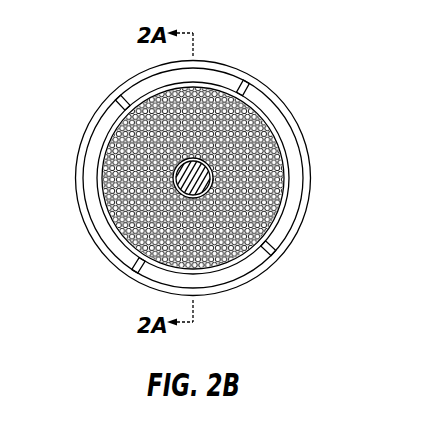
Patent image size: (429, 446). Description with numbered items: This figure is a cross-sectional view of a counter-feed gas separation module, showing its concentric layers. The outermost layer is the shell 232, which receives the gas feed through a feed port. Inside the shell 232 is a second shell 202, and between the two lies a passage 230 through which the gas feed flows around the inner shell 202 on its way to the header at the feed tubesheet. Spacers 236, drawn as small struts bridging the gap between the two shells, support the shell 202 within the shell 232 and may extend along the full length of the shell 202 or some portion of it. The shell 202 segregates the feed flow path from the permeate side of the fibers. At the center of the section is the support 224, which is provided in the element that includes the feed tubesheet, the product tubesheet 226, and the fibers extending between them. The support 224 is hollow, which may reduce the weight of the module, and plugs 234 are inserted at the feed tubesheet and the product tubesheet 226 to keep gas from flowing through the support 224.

The passage 230 is at (96, 149).
The shell 232 is at (222, 62).
The spacers 236 is at (122, 100).
The shell 202 is at (278, 107).
The product tubesheet 226 is at (282, 187).
The support 224 is at (214, 168).
The plugs 234 is at (175, 178).